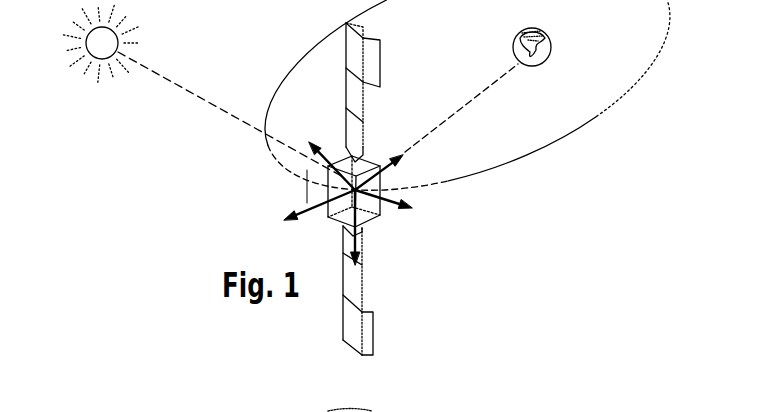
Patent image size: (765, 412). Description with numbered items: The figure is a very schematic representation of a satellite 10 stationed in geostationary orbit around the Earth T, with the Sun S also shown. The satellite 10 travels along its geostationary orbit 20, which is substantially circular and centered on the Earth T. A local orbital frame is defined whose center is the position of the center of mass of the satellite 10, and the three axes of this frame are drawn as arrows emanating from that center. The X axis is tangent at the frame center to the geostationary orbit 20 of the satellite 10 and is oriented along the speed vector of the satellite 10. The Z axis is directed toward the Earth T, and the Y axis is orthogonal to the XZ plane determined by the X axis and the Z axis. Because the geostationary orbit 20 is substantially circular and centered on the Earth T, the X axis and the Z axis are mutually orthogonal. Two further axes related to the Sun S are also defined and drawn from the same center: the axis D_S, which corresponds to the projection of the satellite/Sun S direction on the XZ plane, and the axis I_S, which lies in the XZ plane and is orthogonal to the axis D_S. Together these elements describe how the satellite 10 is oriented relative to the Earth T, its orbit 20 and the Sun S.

The Sun S is at (110, 39).
The Earth T is at (553, 43).
The satellite 10 is at (403, 233).
The geostationary orbit 20 is at (518, 160).
The axis I_S IS is at (323, 153).
The axis D_S DS is at (305, 213).
The X axis X is at (392, 206).
The Y axis Y is at (352, 240).
The Z axis Z is at (387, 171).